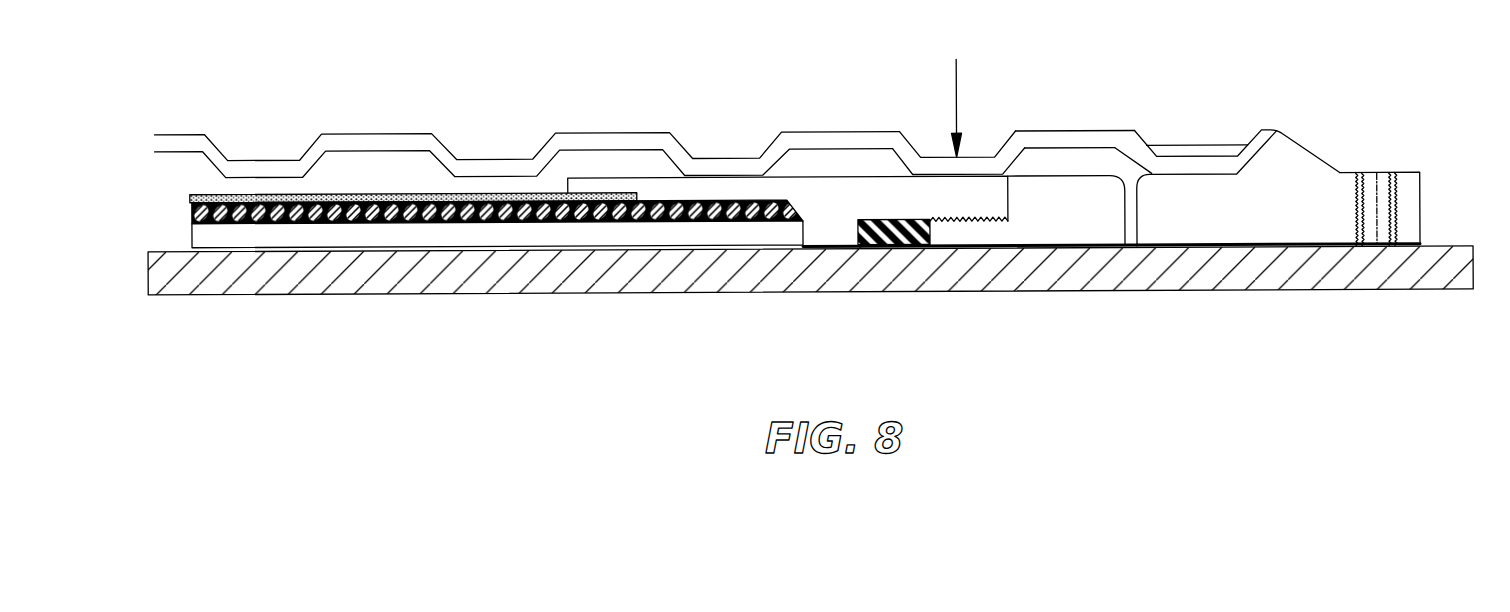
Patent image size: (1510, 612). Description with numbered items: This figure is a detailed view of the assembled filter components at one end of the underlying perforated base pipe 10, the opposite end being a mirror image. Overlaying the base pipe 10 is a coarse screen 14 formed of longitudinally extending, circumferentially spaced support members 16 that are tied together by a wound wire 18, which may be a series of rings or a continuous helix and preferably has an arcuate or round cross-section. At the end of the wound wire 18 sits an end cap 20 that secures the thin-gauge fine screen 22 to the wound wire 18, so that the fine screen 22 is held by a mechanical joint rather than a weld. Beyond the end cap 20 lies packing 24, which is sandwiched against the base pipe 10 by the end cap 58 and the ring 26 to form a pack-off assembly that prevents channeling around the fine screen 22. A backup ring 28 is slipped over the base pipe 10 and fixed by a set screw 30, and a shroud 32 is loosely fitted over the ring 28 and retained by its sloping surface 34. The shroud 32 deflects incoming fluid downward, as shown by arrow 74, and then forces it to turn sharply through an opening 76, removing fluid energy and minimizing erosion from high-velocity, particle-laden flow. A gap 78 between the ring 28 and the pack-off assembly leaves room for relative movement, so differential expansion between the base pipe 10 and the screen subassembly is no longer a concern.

The base pipe 10 is at (1435, 249).
The coarse screen 14 is at (496, 222).
The support members 16 is at (699, 236).
The wound wire 18 is at (598, 223).
The end cap 20 is at (820, 177).
The fine screen 22 is at (380, 192).
The packing 24 is at (880, 249).
The ring 26 is at (1016, 233).
The backup ring 28 is at (1273, 224).
The set screw 30 is at (1377, 176).
The shroud 32 is at (746, 127).
The sloping surface 34 is at (1252, 152).
The end cap 58 is at (828, 228).
The arrow 74 is at (957, 106).
The opening 76 is at (982, 156).
The gap 78 is at (1130, 227).